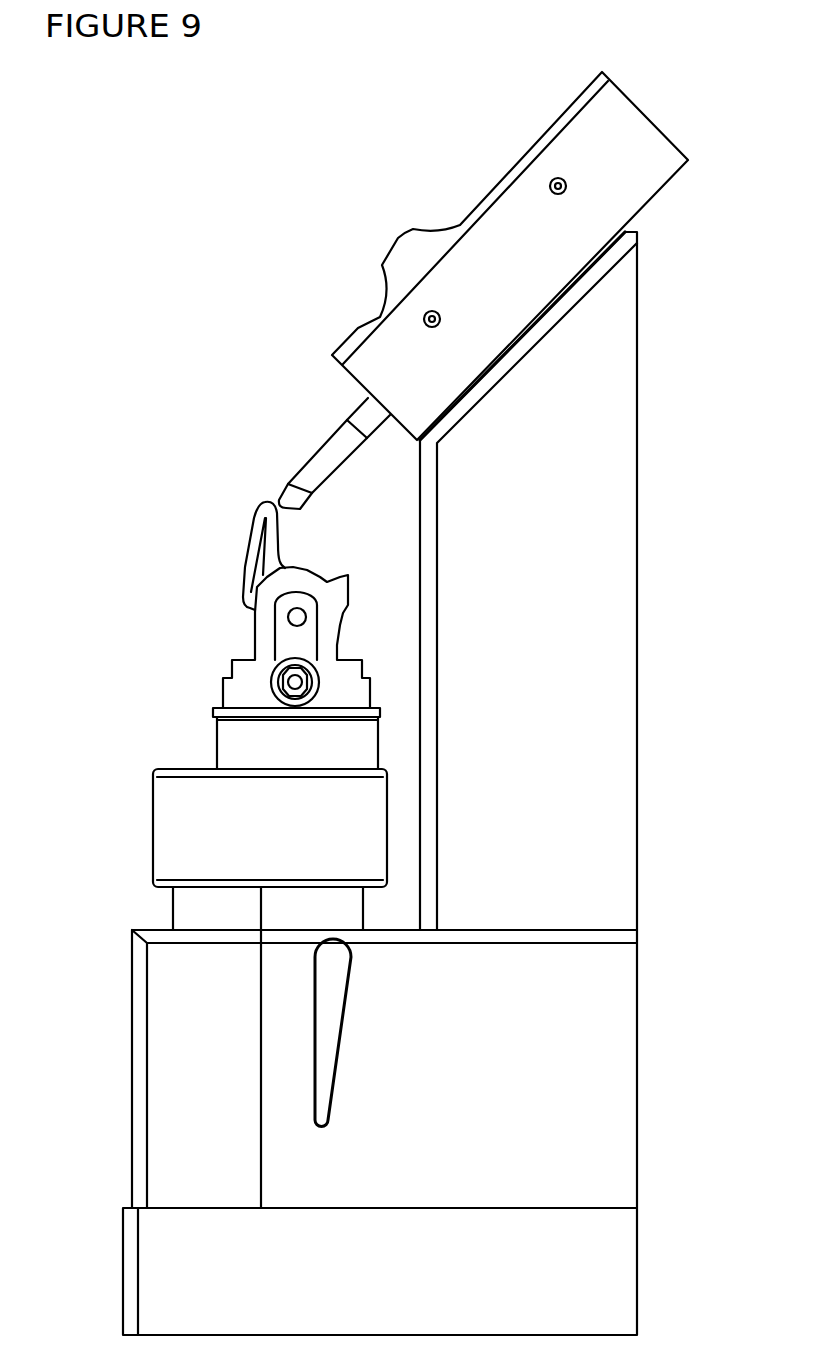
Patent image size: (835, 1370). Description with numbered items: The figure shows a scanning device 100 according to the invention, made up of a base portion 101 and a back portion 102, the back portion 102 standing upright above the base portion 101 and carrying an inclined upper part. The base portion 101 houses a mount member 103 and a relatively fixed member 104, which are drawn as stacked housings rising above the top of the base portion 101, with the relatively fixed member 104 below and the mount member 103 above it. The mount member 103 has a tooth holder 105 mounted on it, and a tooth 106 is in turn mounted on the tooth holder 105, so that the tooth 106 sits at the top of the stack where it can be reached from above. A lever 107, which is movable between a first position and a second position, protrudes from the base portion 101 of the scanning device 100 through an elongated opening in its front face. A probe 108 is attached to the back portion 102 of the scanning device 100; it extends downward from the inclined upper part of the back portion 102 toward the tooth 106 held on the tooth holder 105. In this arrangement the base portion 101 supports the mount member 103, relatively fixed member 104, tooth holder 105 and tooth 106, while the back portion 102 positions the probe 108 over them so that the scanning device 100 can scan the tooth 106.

The scanning device 100 is at (208, 302).
The base portion 101 is at (623, 1108).
The back portion 102 is at (630, 580).
The mount member 103 is at (222, 742).
The relatively fixed member 104 is at (158, 823).
The tooth holder 105 is at (233, 692).
The tooth 106 is at (242, 575).
The lever 107 is at (338, 1005).
The probe 108 is at (326, 446).